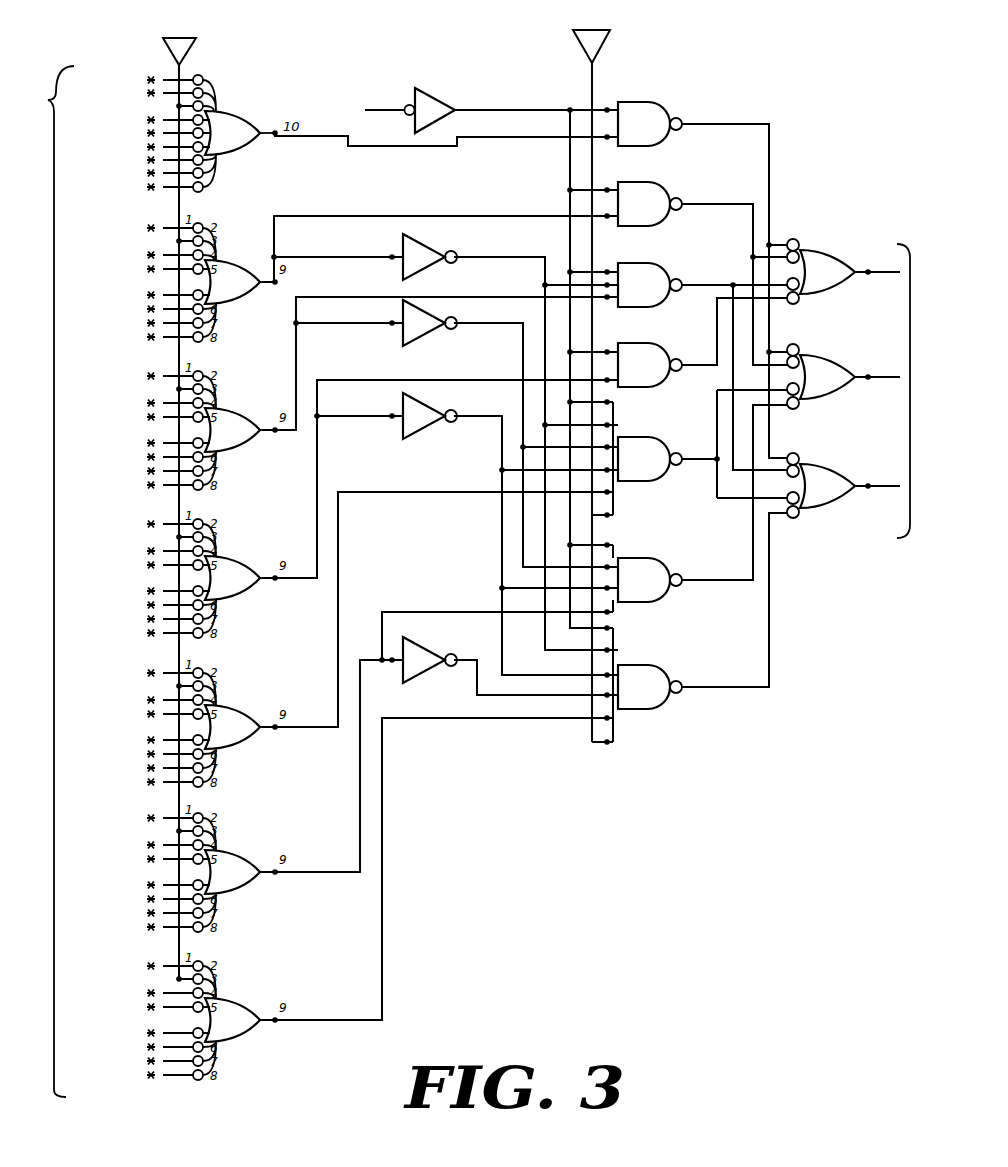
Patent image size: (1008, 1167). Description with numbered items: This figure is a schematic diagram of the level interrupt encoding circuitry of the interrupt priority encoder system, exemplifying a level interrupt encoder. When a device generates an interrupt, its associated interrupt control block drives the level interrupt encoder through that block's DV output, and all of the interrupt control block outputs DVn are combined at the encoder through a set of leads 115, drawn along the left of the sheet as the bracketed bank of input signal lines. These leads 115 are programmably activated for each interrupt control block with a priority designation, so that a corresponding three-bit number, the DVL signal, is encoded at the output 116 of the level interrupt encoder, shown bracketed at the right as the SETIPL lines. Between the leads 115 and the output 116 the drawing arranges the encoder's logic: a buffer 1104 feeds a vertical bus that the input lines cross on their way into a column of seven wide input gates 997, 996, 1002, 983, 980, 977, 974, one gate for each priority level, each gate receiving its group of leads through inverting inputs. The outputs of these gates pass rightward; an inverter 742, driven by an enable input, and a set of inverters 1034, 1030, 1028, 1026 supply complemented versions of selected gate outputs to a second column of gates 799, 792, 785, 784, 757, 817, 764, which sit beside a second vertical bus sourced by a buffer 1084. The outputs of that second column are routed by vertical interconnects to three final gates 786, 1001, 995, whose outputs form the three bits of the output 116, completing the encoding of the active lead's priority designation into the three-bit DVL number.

The set of leads 115 is at (46, 96).
The output of the level interrupt encoder 116 is at (912, 222).
The bus driver U1104 1104 is at (208, 492).
The bus driver U1084 1084 is at (599, 378).
The NAND gate U997 997 is at (215, 139).
The NAND gate U996 996 is at (217, 279).
The NAND gate U1002 1002 is at (217, 427).
The NAND gate U983 983 is at (217, 575).
The NAND gate U980 980 is at (217, 724).
The NAND gate U977 977 is at (217, 869).
The NAND gate U974 974 is at (217, 1017).
The inverter U742 742 is at (394, 100).
The inverter U1034 1034 is at (432, 252).
The inverter U1030 1030 is at (432, 322).
The inverter U1028 1028 is at (432, 412).
The inverter U1026 1026 is at (431, 658).
The NAND gate U799 799 is at (647, 113).
The NAND gate U792 792 is at (647, 193).
The NAND gate U785 785 is at (639, 276).
The NAND gate U784 784 is at (647, 354).
The NAND gate U757 757 is at (647, 449).
The NAND gate U817 817 is at (647, 569).
The NAND gate U764 764 is at (647, 676).
The NAND gate U786 786 is at (839, 269).
The NAND gate U1001 1001 is at (839, 374).
The NAND gate U995 995 is at (839, 482).